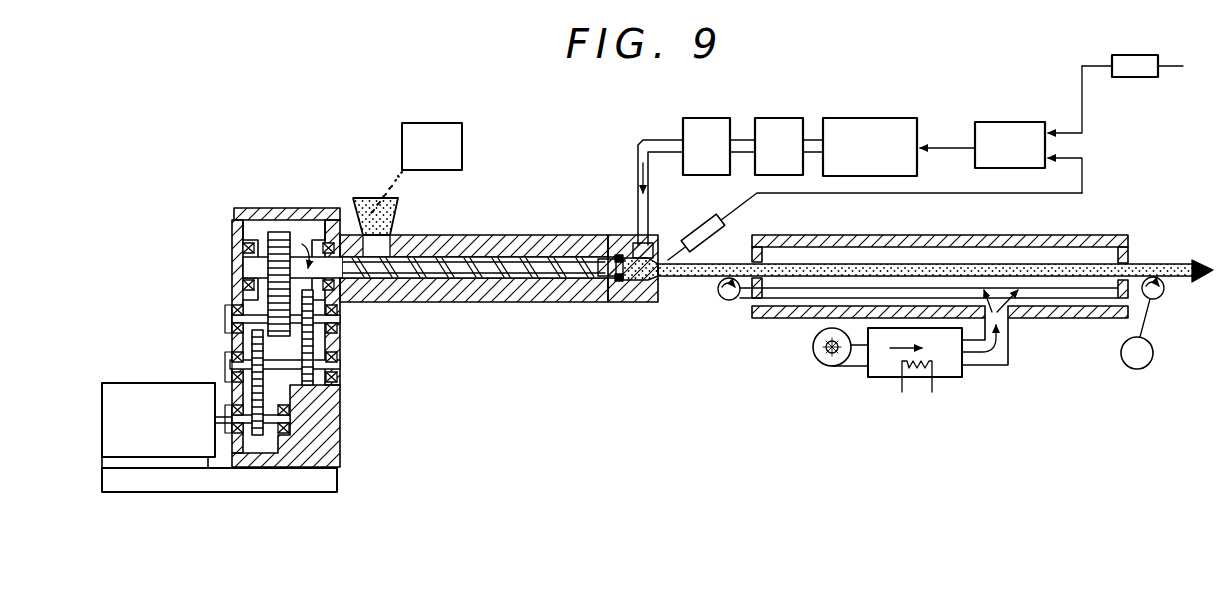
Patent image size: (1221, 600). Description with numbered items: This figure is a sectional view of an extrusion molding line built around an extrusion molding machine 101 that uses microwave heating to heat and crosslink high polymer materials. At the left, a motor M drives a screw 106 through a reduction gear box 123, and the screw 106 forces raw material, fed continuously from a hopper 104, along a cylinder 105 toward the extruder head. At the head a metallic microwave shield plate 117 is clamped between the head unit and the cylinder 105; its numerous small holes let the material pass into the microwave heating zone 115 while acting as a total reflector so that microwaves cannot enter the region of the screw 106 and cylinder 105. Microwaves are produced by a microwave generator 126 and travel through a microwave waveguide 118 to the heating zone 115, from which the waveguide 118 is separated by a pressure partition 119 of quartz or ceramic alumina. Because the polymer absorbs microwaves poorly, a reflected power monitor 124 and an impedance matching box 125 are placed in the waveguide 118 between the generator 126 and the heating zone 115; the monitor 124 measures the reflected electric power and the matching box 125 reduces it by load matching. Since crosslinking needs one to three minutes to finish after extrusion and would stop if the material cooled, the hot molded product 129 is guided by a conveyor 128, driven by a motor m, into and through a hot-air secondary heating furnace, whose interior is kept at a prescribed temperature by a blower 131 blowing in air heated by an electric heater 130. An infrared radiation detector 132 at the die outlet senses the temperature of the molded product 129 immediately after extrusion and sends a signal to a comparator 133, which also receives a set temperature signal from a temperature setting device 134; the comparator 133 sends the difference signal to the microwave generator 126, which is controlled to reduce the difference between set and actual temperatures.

The extrusion molding machine 101 is at (499, 249).
The hopper 104 is at (400, 207).
The cylinder 105 is at (495, 242).
The screw 106 is at (438, 275).
The microwave heating zone 115 is at (651, 300).
The microwave shield plate 117 is at (607, 302).
The microwave waveguide 118 is at (636, 165).
The pressure partition 119 is at (620, 240).
The reduction gear box 123 is at (283, 232).
The reflected power monitor 124 is at (781, 121).
The impedance matching box 125 is at (709, 122).
The microwave generator 126 is at (873, 121).
The conveyor 128 is at (1060, 298).
The molded product 129 is at (703, 280).
The electric heater 130 is at (888, 378).
The blower 131 is at (828, 365).
The infrared radiation detector 132 is at (695, 236).
The comparator 133 is at (1005, 125).
The temperature setting device 134 is at (1137, 57).
The motor M is at (150, 384).
The motor m is at (1141, 370).